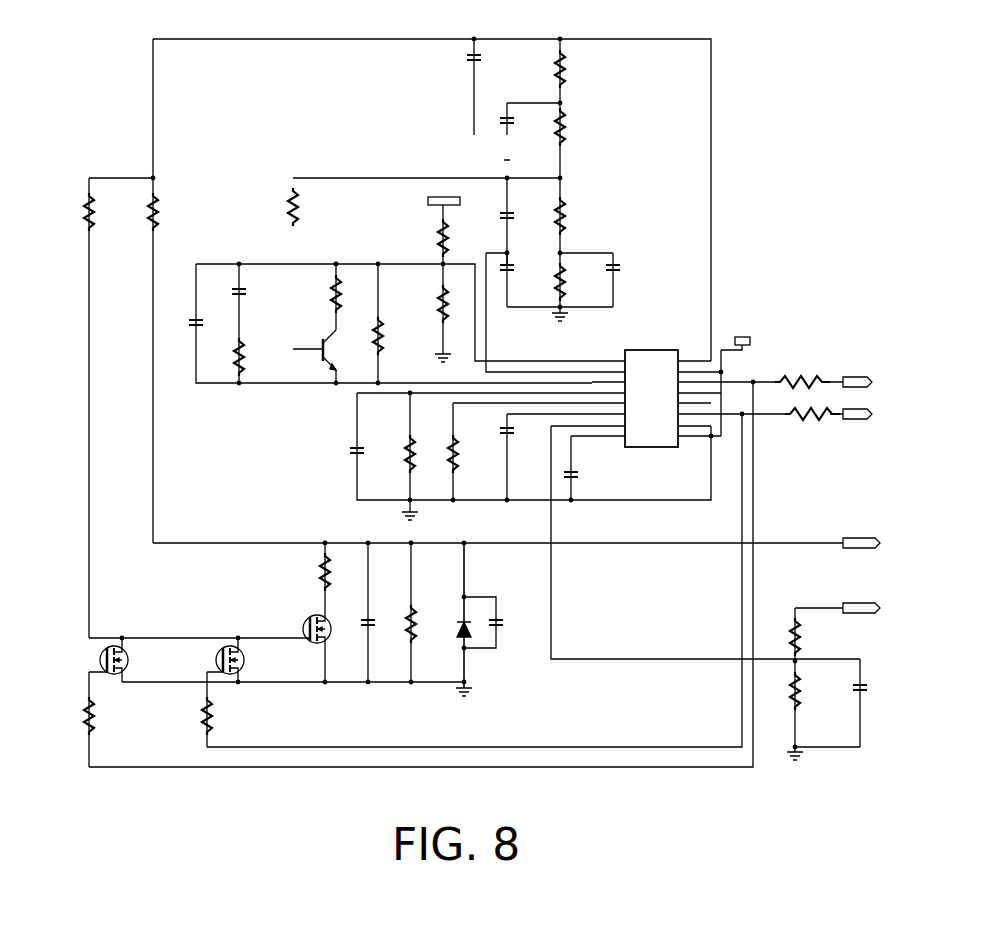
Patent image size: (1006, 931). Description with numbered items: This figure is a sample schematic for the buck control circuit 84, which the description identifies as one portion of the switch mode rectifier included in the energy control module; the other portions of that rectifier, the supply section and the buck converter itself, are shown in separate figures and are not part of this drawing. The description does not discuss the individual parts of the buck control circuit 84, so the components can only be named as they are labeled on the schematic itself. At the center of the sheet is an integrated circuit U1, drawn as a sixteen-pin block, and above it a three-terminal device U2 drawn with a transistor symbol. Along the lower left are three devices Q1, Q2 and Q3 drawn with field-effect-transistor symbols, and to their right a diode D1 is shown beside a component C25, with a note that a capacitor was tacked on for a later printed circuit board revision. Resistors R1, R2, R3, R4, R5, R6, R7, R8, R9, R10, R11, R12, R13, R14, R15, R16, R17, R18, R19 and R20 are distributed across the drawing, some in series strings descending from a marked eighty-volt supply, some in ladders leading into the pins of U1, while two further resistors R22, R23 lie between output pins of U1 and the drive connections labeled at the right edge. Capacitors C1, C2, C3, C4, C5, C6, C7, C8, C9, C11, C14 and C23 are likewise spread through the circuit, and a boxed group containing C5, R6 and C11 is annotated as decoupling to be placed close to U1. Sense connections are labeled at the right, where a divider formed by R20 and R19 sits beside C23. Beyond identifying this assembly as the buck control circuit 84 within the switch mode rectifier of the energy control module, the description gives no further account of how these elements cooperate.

The buck control circuit 84 is at (806, 234).
The PWM controller IC U1 is at (642, 391).
The transistor U2 is at (328, 367).
The MOSFET Q1 is at (105, 660).
The MOSFET Q2 is at (221, 660).
The MOSFET Q3 is at (308, 648).
The diode D1 is at (469, 619).
The resistor R1 is at (416, 456).
The resistor R2 is at (461, 451).
The resistor R3 is at (568, 71).
The resistor R4 is at (568, 140).
The resistor R5 is at (568, 215).
The resistor R6 is at (566, 287).
The resistor R7 is at (451, 234).
The resistor R8 is at (449, 313).
The resistor R9 is at (300, 207).
The resistor R10 is at (347, 297).
The resistor R11 is at (389, 323).
The resistor R12 is at (250, 360).
The resistor R13 is at (100, 212).
The resistor R14 is at (164, 212).
The resistor R15 is at (100, 719).
The resistor R16 is at (218, 709).
The resistor R17 is at (336, 579).
The resistor R18 is at (422, 612).
The resistor R19 is at (805, 710).
The resistor R20 is at (806, 634).
The resistor R22 is at (802, 369).
The resistor R23 is at (812, 409).
The capacitor C1 is at (514, 457).
The capacitor C2 is at (578, 468).
The capacitor C3 is at (514, 119).
The capacitor C4 is at (514, 221).
The capacitor C5 is at (514, 280).
The capacitor C6 is at (246, 301).
The capacitor C7 is at (203, 327).
The capacitor C8 is at (481, 87).
The capacitor C9 is at (375, 612).
The capacitor C11 is at (623, 280).
The capacitor C14 is at (367, 449).
The capacitor C23 is at (870, 703).
The capacitor C25 is at (506, 621).